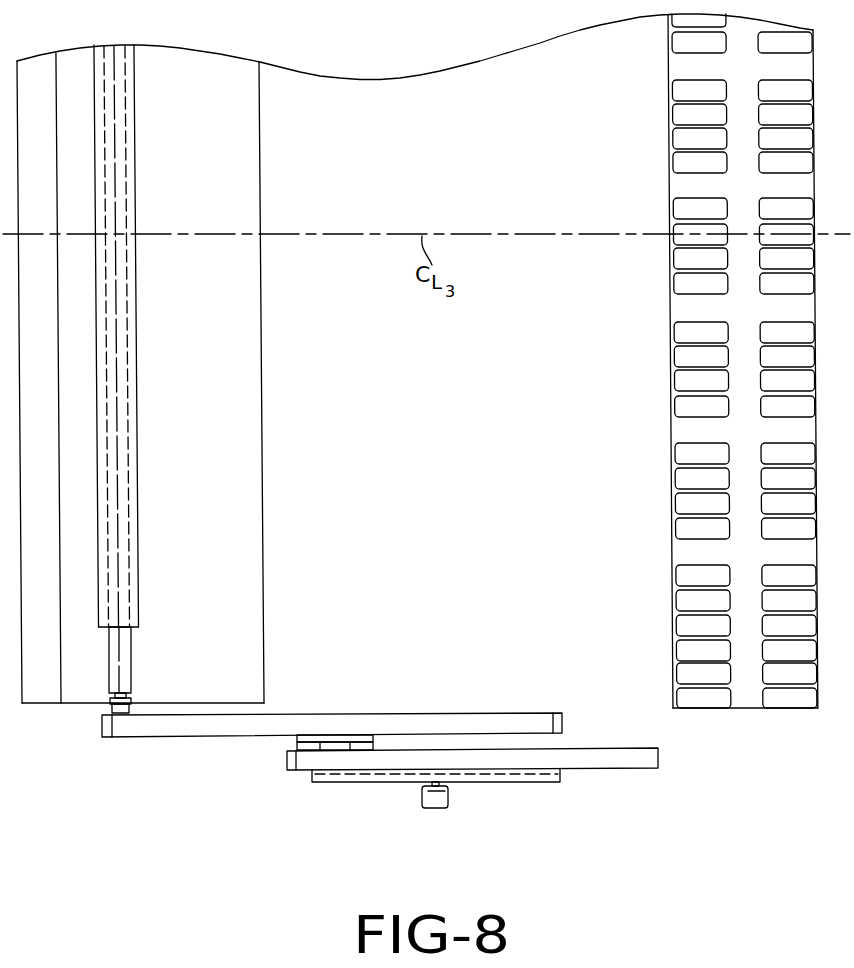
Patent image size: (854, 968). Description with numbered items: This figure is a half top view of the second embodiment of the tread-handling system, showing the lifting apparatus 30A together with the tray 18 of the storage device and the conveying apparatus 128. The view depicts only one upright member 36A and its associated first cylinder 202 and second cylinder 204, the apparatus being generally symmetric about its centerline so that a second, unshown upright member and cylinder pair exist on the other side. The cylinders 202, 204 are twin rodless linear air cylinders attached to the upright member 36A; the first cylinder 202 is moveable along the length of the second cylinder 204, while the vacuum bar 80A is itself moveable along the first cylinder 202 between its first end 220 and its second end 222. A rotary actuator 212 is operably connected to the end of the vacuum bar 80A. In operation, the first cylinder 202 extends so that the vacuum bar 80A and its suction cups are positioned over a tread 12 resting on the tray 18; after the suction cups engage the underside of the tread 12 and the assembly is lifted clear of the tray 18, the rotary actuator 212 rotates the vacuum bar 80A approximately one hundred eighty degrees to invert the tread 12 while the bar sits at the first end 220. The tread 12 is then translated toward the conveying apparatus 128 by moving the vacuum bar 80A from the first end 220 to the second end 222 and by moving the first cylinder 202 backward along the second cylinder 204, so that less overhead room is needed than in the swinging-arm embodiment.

The tread 12 is at (133, 533).
The tray 18 is at (218, 474).
The lifting apparatus 30A is at (335, 682).
The upright member 36A is at (423, 798).
The vacuum bar 80A is at (124, 658).
The conveying apparatus 128 is at (650, 421).
The first cylinder 202 is at (477, 718).
The second cylinder 204 is at (612, 758).
The rotary actuator 212 is at (110, 706).
The first end 220 is at (212, 728).
The second end 222 is at (546, 718).